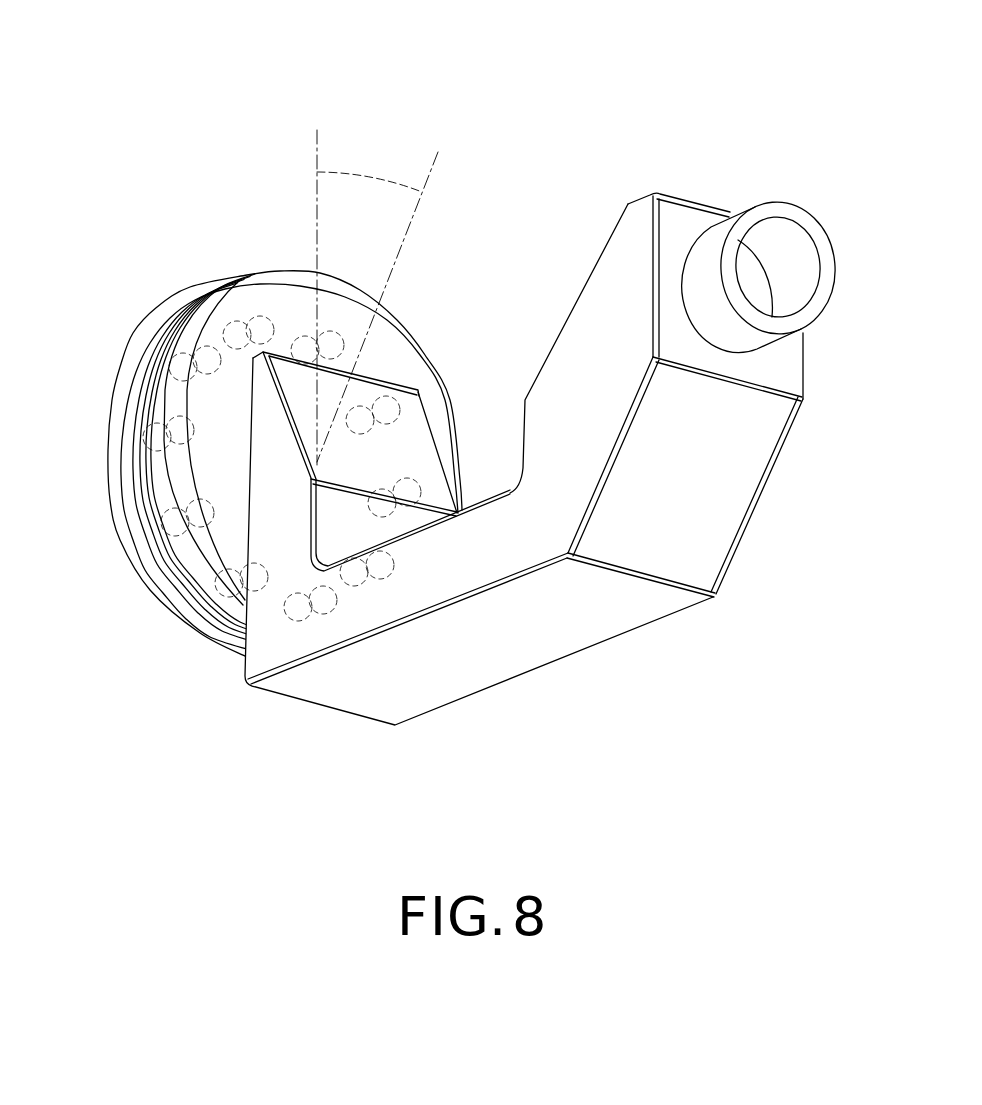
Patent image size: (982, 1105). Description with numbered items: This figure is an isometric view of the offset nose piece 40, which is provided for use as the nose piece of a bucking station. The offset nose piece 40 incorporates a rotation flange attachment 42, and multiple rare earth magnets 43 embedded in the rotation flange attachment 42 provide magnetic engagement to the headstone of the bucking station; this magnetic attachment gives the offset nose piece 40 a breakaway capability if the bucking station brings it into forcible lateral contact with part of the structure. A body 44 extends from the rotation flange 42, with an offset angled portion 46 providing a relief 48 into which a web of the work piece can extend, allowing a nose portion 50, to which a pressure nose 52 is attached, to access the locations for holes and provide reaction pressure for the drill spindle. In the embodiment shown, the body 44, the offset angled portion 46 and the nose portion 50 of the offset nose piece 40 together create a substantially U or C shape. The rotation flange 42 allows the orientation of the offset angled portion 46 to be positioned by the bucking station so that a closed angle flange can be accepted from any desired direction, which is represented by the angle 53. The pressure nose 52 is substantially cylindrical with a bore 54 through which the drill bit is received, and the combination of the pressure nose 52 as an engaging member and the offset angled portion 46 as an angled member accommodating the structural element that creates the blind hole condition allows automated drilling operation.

The offset nose piece 40 is at (544, 450).
The rotation flange attachment 42 is at (203, 317).
The rare earth magnets 43 is at (160, 420).
The body 44 is at (284, 330).
The offset angled portion 46 is at (418, 582).
The relief 48 is at (468, 410).
The nose portion 50 is at (690, 433).
The pressure nose 52 is at (790, 228).
The angle 53 is at (369, 177).
The bore 54 is at (775, 268).